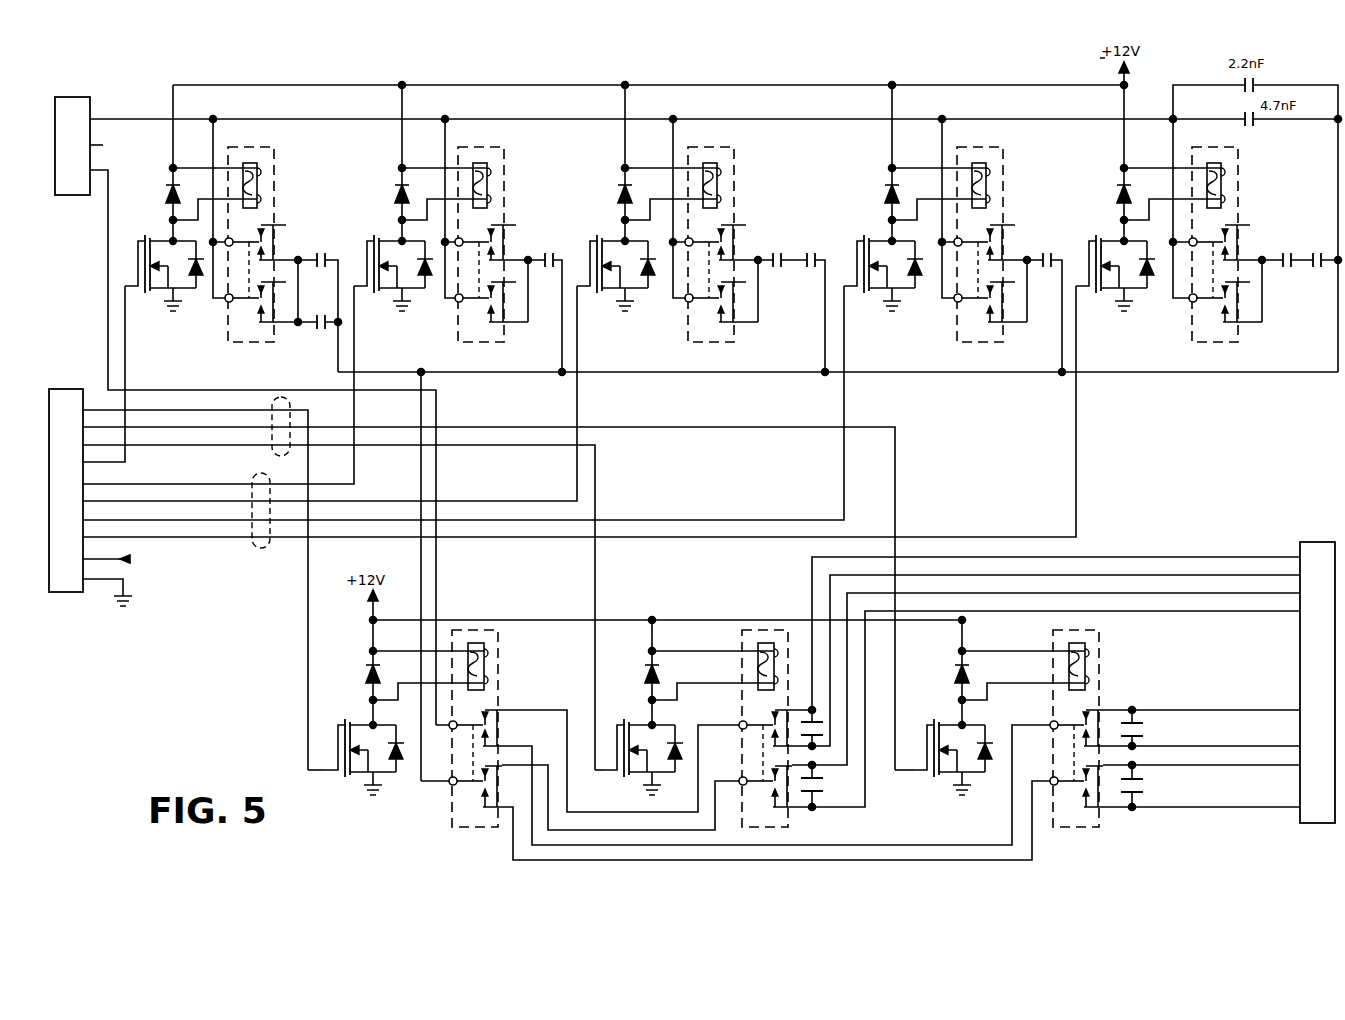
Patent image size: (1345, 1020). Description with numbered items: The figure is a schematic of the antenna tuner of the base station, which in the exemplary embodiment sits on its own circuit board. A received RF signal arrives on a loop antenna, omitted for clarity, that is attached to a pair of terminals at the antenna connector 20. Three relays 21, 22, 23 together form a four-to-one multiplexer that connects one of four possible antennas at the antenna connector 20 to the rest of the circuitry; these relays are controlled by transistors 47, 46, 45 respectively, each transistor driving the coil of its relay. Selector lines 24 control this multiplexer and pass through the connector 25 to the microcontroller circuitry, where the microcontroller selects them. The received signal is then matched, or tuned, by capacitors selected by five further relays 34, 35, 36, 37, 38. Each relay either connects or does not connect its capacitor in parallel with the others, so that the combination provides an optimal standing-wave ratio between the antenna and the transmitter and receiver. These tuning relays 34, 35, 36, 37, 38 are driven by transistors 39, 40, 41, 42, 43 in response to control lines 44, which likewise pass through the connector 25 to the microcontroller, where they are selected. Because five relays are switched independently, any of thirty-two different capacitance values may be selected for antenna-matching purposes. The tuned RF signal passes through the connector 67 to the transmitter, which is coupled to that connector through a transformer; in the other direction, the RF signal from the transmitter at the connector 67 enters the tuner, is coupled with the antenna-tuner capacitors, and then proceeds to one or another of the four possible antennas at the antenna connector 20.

The antenna connector 20 is at (1318, 541).
The relay 21 is at (1105, 667).
The relay 22 is at (740, 702).
The relay 23 is at (504, 658).
The selector lines 24 is at (270, 450).
The connector 25 is at (63, 593).
The relay 34 is at (280, 153).
The relay 35 is at (510, 153).
The relay 36 is at (738, 155).
The relay 37 is at (1007, 155).
The relay 38 is at (1244, 157).
The transistor 39 is at (147, 233).
The transistor 40 is at (373, 234).
The transistor 41 is at (596, 236).
The transistor 42 is at (863, 236).
The transistor 43 is at (1095, 236).
The control lines 44 is at (259, 549).
The transistor 45 is at (344, 719).
The transistor 46 is at (623, 719).
The transistor 47 is at (933, 719).
The connector 67 is at (92, 97).